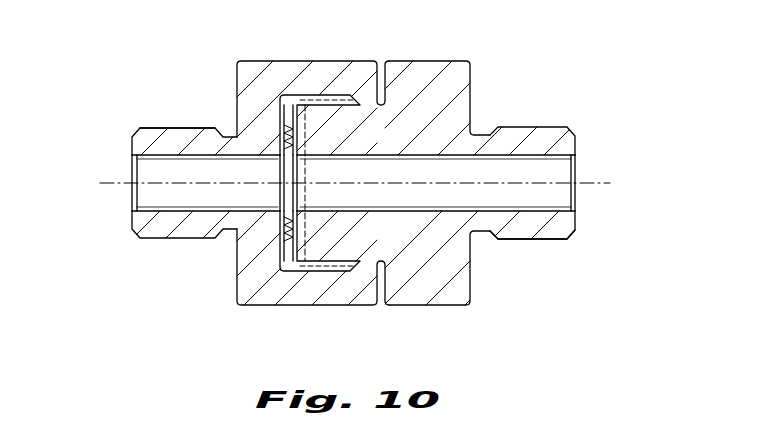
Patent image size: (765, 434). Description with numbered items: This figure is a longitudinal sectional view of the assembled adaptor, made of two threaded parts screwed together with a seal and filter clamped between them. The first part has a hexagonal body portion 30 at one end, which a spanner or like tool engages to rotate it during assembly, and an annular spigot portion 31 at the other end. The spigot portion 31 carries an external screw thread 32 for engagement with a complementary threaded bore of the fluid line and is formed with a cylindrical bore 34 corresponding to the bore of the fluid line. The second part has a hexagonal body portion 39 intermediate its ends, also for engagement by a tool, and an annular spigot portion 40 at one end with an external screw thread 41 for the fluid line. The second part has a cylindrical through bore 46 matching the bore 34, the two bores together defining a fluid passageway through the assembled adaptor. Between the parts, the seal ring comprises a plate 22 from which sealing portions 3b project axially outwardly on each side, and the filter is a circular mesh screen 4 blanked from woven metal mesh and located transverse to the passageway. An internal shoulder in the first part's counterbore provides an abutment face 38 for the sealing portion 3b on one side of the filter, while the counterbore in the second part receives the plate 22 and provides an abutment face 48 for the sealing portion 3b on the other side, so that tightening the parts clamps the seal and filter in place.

The hexagonal body portion 30 is at (250, 61).
The hexagonal body portion 39 is at (443, 61).
The annular spigot portion 40 is at (577, 137).
The external screw thread 41 is at (545, 233).
The cylindrical through bore 46 is at (553, 213).
The annular spigot portion 31 is at (162, 223).
The external screw thread 32 is at (168, 128).
The cylindrical bore 34 is at (172, 155).
The mesh screen 4 is at (277, 185).
The sealing portions 3b is at (273, 130).
The abutment face 38 is at (282, 252).
The plate 22 is at (295, 250).
The abutment face 48 is at (300, 240).